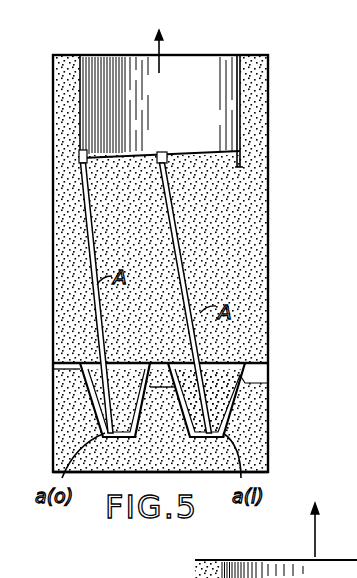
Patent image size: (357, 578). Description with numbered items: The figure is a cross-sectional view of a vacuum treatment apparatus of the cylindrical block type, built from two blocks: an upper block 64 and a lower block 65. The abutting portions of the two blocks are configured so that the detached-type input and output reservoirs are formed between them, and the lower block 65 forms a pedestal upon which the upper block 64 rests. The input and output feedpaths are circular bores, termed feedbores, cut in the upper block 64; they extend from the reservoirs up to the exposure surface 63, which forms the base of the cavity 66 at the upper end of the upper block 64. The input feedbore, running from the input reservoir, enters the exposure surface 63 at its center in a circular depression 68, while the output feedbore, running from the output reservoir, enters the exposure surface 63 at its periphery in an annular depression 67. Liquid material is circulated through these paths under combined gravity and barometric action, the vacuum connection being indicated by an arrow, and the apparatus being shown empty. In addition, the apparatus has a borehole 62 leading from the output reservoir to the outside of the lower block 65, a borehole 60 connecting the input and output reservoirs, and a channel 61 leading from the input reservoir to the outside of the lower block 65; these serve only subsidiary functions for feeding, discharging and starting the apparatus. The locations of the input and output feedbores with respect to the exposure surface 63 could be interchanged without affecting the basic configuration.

The borehole 60 is at (165, 388).
The channel 61 is at (263, 380).
The borehole 62 is at (86, 397).
The exposure surface 63 is at (136, 152).
The upper block 64 is at (258, 213).
The lower block 65 is at (265, 432).
The cavity 66 is at (205, 104).
The annular depression 67 is at (83, 150).
The circular depression 68 is at (165, 152).